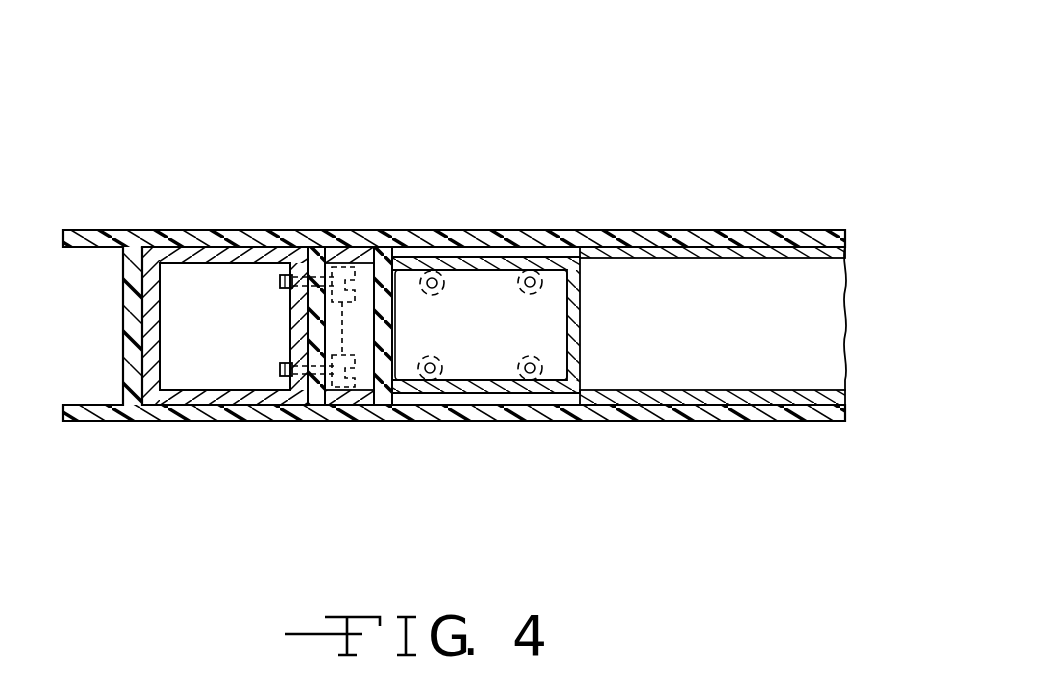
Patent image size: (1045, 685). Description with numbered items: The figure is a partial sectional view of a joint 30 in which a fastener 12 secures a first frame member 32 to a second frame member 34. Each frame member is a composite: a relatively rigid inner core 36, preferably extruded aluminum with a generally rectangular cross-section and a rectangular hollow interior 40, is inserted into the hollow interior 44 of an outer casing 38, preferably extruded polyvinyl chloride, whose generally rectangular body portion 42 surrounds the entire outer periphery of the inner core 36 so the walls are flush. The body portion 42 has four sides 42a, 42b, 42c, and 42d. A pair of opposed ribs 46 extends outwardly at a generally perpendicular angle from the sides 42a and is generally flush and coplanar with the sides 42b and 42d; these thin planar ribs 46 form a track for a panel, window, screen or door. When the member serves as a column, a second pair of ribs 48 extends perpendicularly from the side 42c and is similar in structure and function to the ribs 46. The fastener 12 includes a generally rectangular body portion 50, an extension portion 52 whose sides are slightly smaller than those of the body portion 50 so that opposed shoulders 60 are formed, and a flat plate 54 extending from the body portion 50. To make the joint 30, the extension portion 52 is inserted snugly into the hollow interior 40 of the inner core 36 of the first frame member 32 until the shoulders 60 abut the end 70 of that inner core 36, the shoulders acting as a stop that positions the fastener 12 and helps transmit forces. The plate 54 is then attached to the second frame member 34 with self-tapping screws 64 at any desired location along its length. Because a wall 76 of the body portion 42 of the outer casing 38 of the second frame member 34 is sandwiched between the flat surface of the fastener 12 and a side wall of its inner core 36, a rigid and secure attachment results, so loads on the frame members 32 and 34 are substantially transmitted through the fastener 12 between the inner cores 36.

The fastener 12 is at (590, 282).
The joint 30 is at (518, 104).
The first frame member 32 is at (745, 210).
The second frame member 34 is at (173, 210).
The inner core 36 is at (164, 355).
The outer casing 38 is at (158, 422).
The hollow interior 40 is at (206, 266).
The body portion 42 is at (126, 335).
The side 42a is at (303, 349).
The side 42b is at (243, 252).
The side 42c is at (133, 278).
The side 42d is at (230, 410).
The hollow interior 44 is at (210, 388).
The ribs 46 is at (346, 248).
The ribs 48 is at (81, 230).
The body portion 50 is at (360, 388).
The extension portion 52 is at (540, 323).
The plate 54 is at (290, 326).
The shoulders 60 is at (440, 257).
The self-tapping screws 64 is at (552, 262).
The end 70 is at (372, 250).
The wall 76 is at (290, 294).